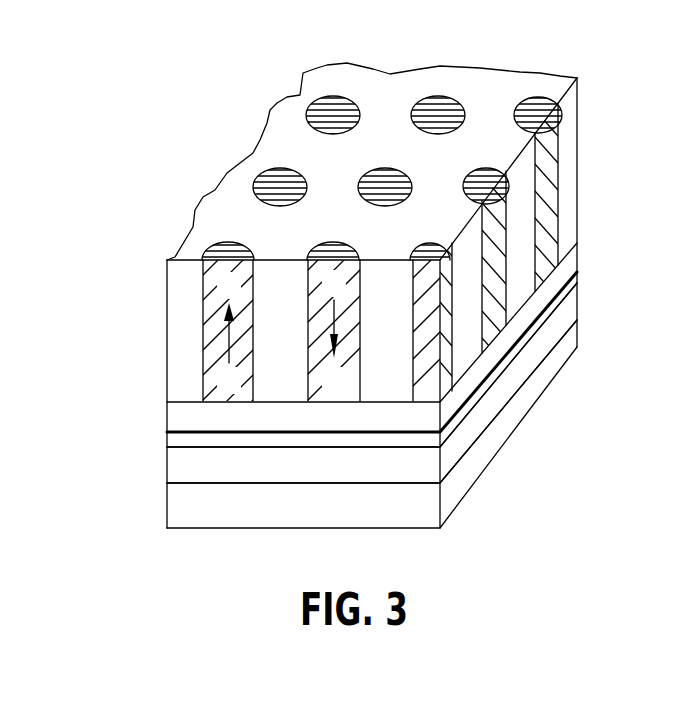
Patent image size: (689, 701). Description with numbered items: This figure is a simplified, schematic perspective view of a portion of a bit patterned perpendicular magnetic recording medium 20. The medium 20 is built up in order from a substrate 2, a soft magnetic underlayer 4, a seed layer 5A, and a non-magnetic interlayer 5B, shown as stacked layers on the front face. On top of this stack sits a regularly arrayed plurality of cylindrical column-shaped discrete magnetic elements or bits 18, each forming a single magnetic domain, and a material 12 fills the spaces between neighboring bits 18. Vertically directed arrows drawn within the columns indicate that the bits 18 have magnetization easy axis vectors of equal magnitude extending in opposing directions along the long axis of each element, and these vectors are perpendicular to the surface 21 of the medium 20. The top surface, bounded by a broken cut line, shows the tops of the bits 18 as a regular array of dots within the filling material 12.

The bit patterned perpendicular magnetic recording medium 20 is at (150, 142).
The surface 21 is at (278, 138).
The material 12 is at (389, 100).
The cylindrical column-shaped discrete magnetic elements or bits 18 is at (533, 105).
The non-magnetic interlayer 5B is at (158, 422).
The seed layer 5A is at (158, 443).
The soft magnetic underlayer 4 is at (158, 469).
The substrate 2 is at (158, 512).